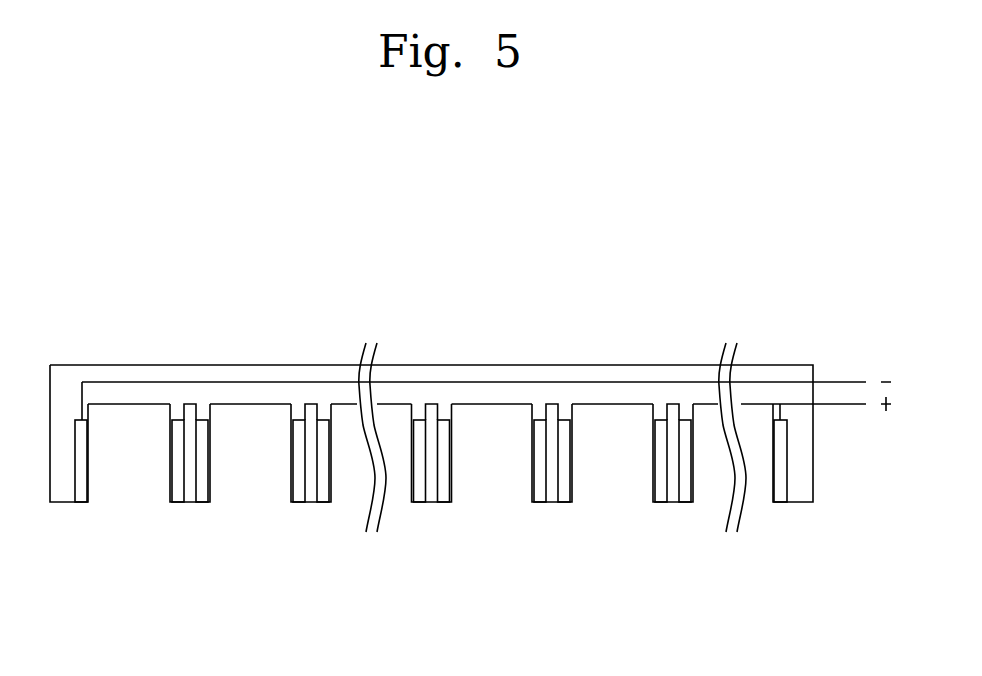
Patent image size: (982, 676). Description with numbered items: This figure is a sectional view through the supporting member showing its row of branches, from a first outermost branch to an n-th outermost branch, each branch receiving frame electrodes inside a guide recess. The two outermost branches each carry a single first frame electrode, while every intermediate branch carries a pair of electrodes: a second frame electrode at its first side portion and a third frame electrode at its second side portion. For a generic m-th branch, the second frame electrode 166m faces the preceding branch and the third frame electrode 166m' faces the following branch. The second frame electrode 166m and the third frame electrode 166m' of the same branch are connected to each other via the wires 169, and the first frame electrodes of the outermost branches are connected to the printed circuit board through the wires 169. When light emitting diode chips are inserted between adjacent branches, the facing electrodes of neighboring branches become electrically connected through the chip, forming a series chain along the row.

The wires 169 is at (856, 382).
The second frame electrode 166m is at (514, 519).
The third frame electrode 166m' is at (572, 503).